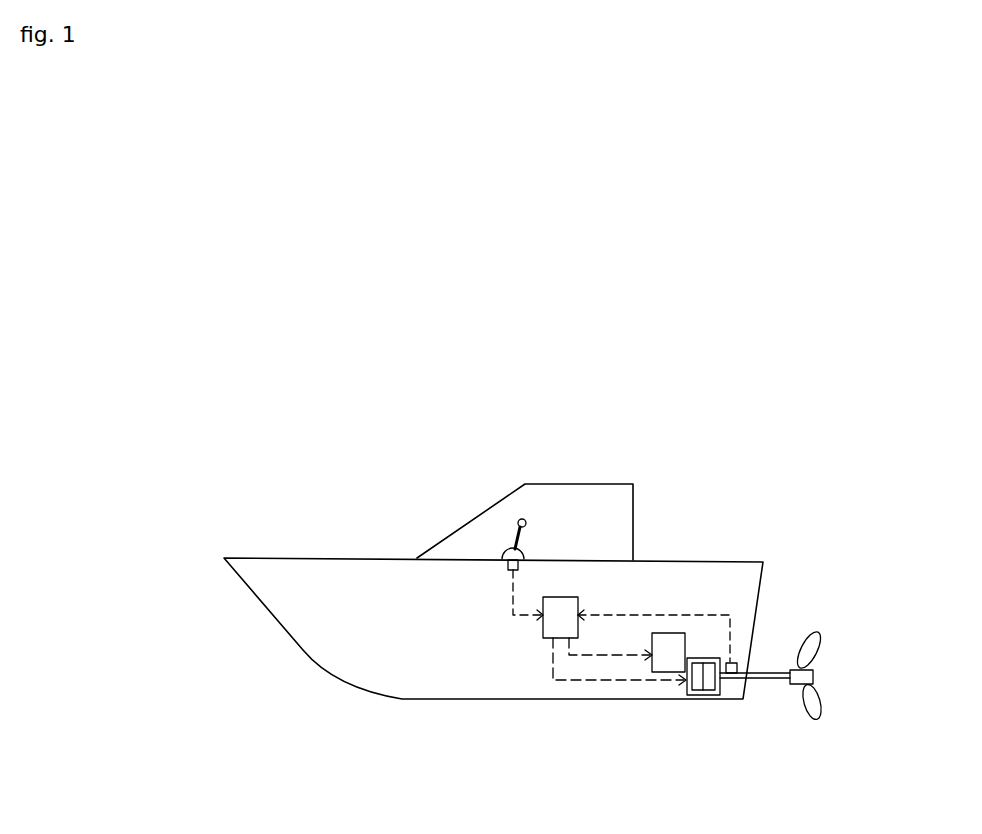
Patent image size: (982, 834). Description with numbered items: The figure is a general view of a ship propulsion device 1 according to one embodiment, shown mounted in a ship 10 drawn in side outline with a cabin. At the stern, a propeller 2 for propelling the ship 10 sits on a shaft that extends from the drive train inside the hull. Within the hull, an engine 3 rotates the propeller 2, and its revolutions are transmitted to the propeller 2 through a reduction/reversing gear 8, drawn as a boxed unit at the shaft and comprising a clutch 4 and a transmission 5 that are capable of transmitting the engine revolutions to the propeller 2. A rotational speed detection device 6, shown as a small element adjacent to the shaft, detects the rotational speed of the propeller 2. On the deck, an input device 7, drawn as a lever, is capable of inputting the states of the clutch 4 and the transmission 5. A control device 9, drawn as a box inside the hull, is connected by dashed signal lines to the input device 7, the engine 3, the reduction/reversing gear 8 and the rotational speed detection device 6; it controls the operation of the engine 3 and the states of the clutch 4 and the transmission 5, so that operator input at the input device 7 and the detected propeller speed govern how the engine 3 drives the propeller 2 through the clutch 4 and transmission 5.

The ship propulsion device 1 is at (698, 579).
The propeller 2 is at (814, 677).
The engine 3 is at (652, 666).
The clutch 4 is at (696, 695).
The transmission 5 is at (712, 695).
The rotational speed detection device 6 is at (739, 668).
The input device 7 is at (516, 551).
The reduction/reversing gear 8 is at (703, 696).
The control device 9 is at (543, 629).
The ship 10 is at (360, 558).